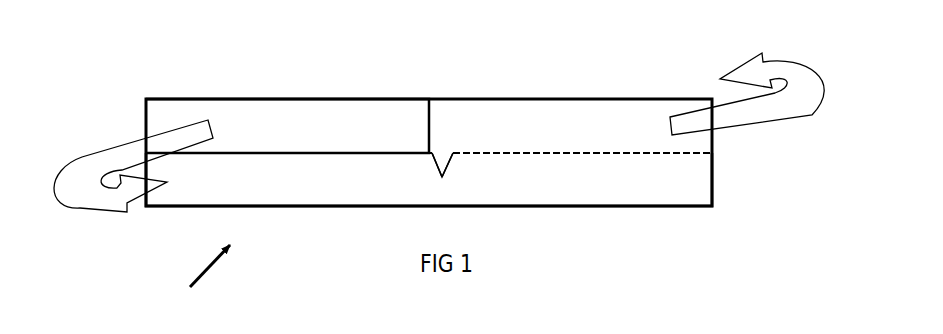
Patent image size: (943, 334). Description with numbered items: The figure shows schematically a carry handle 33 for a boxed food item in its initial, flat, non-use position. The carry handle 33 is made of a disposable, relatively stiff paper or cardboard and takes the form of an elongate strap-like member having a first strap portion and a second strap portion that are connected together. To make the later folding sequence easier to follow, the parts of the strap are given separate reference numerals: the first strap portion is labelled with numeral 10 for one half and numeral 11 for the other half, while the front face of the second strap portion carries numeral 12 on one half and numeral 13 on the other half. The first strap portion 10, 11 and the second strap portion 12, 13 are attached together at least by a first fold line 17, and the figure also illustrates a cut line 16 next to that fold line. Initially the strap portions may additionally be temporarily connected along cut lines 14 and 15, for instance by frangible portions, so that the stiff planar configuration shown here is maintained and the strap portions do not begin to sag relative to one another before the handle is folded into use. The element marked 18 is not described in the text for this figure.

The first strap portion half 10 is at (429, 152).
The first strap portion other half 11 is at (287, 126).
The second strap portion half 12 is at (570, 179).
The second strap portion other half 13 is at (287, 179).
The cut line 14 is at (303, 147).
The cut line 15 is at (542, 149).
The cut line 16 is at (427, 161).
The first fold line 17 is at (452, 159).
The notch / break point 18 is at (440, 157).
The carry handle 33 is at (198, 274).